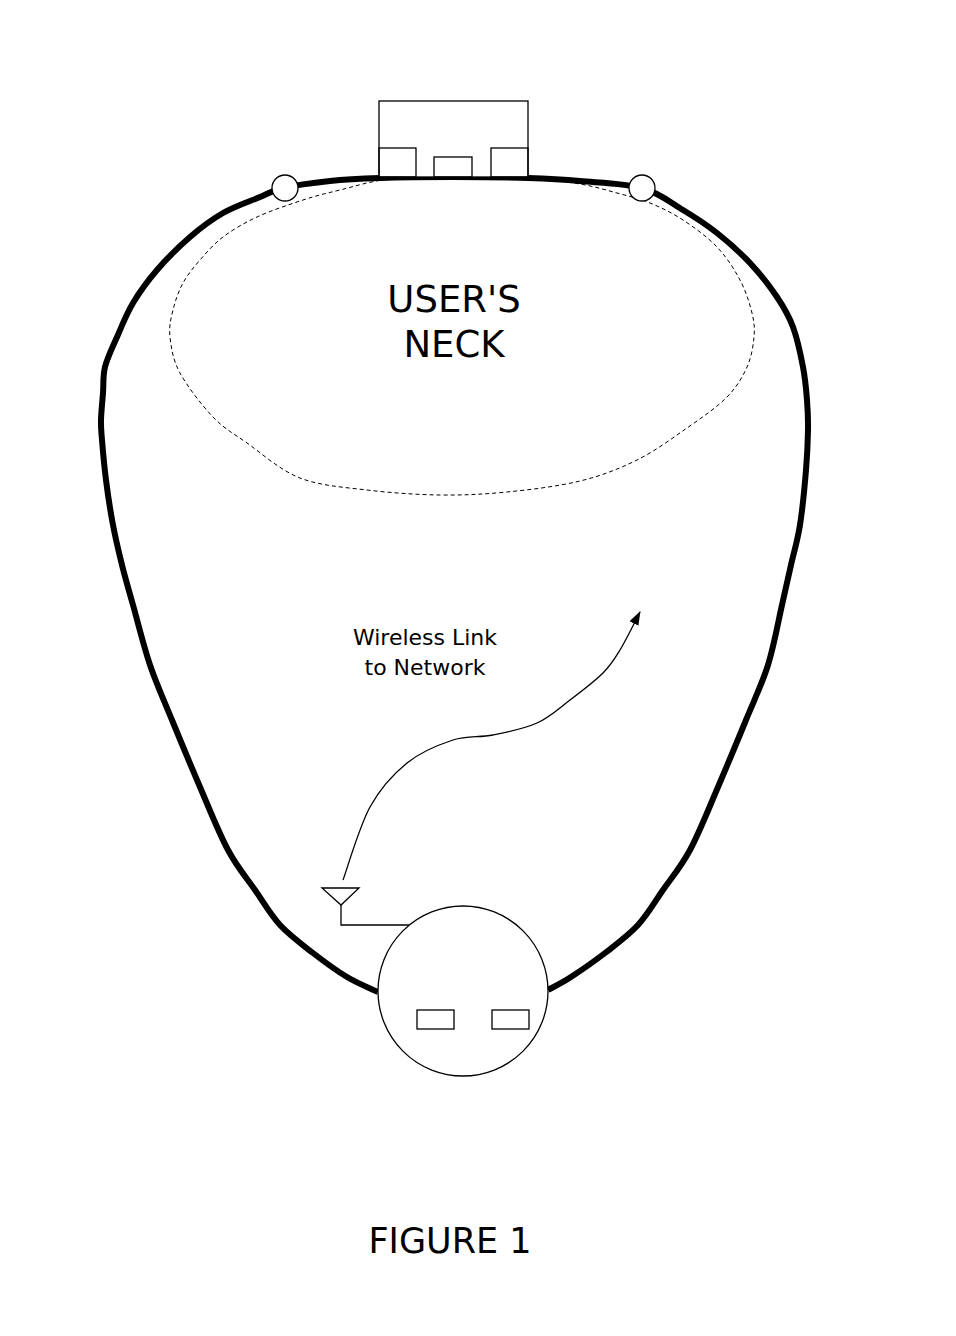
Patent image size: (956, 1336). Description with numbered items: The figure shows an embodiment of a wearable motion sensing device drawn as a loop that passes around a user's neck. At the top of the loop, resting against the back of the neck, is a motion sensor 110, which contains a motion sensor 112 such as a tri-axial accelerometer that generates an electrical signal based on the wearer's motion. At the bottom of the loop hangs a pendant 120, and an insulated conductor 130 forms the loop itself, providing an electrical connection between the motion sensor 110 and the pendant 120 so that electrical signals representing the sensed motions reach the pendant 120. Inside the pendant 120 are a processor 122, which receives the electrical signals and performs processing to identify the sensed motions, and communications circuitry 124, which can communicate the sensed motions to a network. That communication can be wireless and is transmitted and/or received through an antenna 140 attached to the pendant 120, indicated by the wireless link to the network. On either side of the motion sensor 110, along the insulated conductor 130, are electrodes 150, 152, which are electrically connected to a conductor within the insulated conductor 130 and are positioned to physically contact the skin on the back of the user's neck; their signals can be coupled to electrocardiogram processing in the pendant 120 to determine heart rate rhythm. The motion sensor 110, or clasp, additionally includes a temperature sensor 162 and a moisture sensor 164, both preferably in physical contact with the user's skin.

The motion sensor 110 is at (453, 117).
The motion sensor 112 is at (453, 153).
The pendant 120 is at (472, 935).
The processor 122 is at (508, 1031).
The communications circuitry 124 is at (435, 1031).
The insulated conductor 130 is at (770, 640).
The antenna 140 is at (341, 885).
The electrode 150 is at (643, 173).
The electrode 152 is at (277, 167).
The temperature sensor 162 is at (511, 152).
The moisture sensor 164 is at (397, 147).